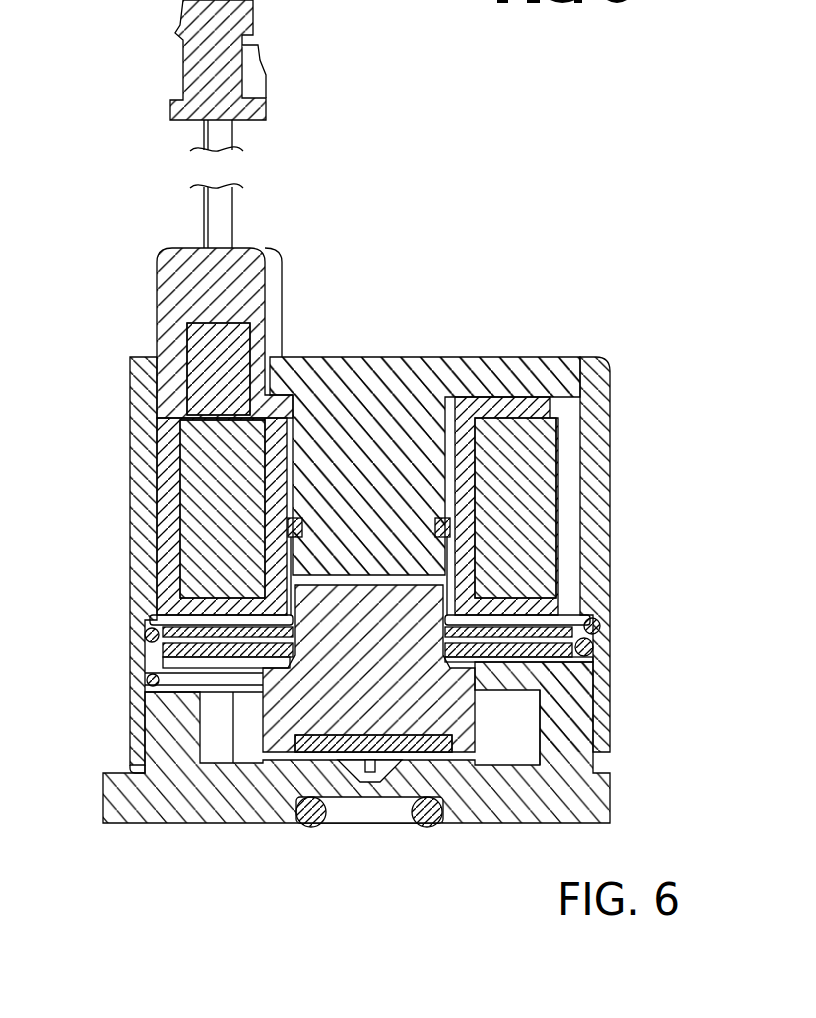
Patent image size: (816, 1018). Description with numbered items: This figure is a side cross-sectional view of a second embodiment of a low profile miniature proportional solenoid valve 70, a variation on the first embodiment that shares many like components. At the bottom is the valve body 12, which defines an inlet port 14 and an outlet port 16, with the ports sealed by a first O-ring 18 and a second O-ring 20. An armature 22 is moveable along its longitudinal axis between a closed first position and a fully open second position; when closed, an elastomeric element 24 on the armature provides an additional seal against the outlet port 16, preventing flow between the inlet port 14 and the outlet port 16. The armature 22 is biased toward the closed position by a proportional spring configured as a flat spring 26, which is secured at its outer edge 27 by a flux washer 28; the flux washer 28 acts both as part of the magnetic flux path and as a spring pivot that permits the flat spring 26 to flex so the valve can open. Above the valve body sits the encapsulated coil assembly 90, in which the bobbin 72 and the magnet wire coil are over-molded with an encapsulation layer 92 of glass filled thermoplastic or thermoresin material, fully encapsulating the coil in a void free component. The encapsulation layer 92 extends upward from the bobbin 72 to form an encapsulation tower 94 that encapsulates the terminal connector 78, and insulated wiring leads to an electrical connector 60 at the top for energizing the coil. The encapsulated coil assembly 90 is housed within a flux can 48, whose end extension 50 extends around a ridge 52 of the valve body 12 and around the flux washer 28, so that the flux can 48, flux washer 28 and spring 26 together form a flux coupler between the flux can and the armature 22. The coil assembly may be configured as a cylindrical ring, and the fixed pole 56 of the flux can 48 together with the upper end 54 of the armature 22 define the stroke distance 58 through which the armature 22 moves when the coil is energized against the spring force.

The valve body 12 is at (162, 802).
The inlet port 14 is at (225, 743).
The outlet port 16 is at (377, 787).
The first O-ring 18 is at (280, 827).
The second O-ring 20 is at (413, 823).
The armature 22 is at (285, 712).
The elastomeric element 24 is at (350, 742).
The flat spring 26 is at (165, 668).
The outer edge 27 is at (593, 650).
The flux washer 28 is at (600, 628).
The flux can 48 is at (133, 530).
The end extension 50 is at (585, 712).
The ridge 52 is at (572, 733).
The upper end 54 is at (405, 605).
The fixed pole 56 is at (375, 542).
The stroke distance 58 is at (418, 582).
The electrical connector 60 is at (173, 110).
The proportional solenoid valve 70 is at (636, 278).
The bobbin 72 is at (510, 415).
The terminal connector 78 is at (197, 377).
The encapsulated coil assembly 90 is at (592, 447).
The encapsulation layer 92 is at (170, 452).
The encapsulation tower 94 is at (197, 295).